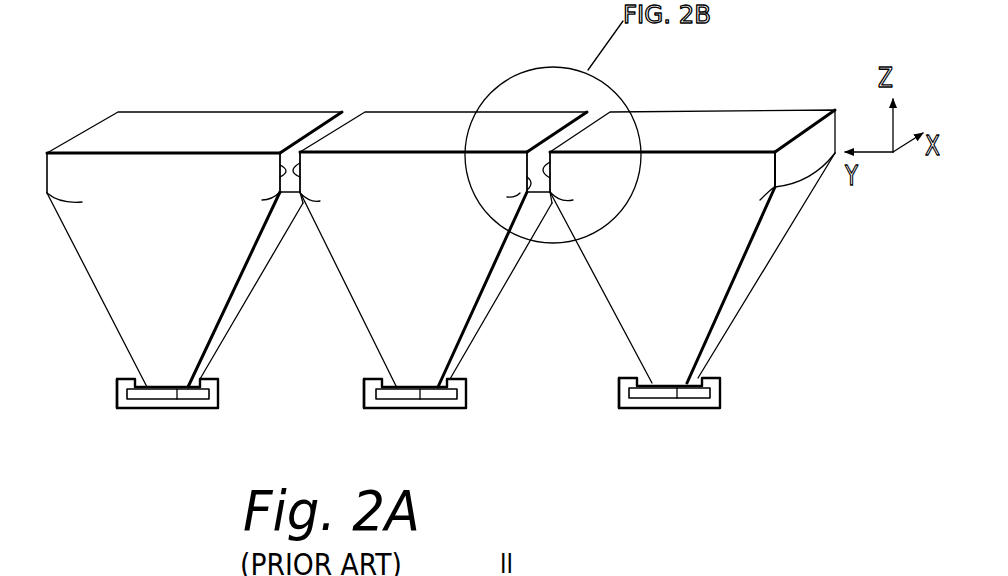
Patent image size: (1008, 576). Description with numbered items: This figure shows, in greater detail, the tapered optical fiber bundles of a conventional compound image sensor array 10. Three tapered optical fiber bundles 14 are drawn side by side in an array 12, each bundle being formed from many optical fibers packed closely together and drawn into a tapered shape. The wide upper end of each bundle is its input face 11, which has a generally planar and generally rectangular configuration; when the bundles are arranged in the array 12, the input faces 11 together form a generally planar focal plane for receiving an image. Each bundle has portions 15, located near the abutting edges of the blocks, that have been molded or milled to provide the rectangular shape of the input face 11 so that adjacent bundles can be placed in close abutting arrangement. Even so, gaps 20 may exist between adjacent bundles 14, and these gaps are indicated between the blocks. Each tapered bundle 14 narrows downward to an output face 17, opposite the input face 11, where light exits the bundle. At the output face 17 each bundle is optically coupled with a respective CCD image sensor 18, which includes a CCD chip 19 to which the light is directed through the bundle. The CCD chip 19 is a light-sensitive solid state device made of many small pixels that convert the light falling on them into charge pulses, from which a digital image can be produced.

The compound image sensor array 10 is at (441, 101).
The input face 11 is at (228, 128).
The array 12 is at (218, 82).
The tapered optical fiber bundle 14 is at (372, 289).
The portions 15 is at (278, 181).
The output face 17 is at (178, 403).
The CCD image sensor 18 is at (117, 392).
The CCD chip 19 is at (153, 393).
The gap 20 is at (353, 113).